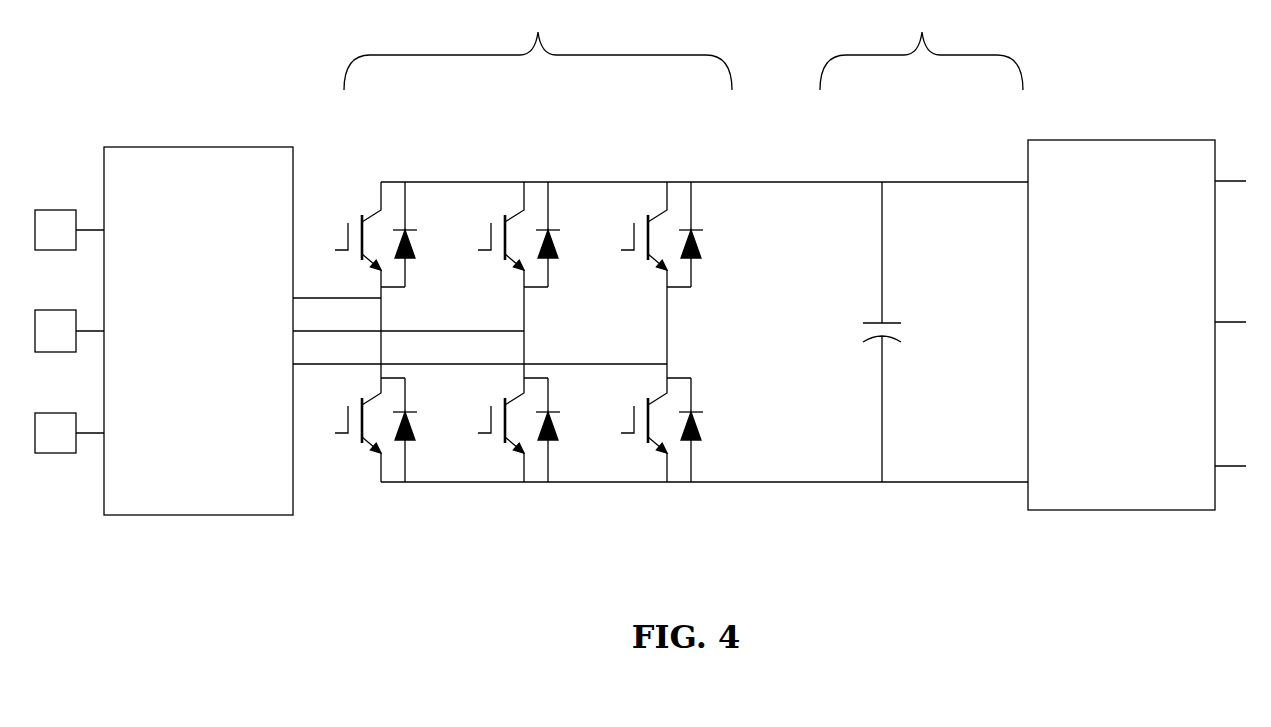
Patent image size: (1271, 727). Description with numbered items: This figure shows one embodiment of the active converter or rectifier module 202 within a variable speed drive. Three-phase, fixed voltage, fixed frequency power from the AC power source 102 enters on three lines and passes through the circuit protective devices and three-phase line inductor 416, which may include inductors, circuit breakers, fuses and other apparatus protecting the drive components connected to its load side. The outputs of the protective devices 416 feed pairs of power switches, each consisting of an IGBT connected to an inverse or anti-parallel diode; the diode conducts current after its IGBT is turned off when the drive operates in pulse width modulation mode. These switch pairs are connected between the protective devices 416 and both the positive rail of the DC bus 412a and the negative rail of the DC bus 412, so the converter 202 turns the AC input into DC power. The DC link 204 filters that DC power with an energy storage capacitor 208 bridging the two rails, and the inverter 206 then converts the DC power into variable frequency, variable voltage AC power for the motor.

The AC power source 102 is at (66, 133).
The circuit protective devices and three-phase line inductor 416 is at (203, 147).
The converter 202 is at (523, 277).
The DC link 204 is at (921, 242).
The positive rail of the DC bus 412a is at (855, 182).
The negative rail of the DC bus 412 is at (855, 482).
The capacitor 208 is at (900, 333).
The inverter 206 is at (1112, 140).